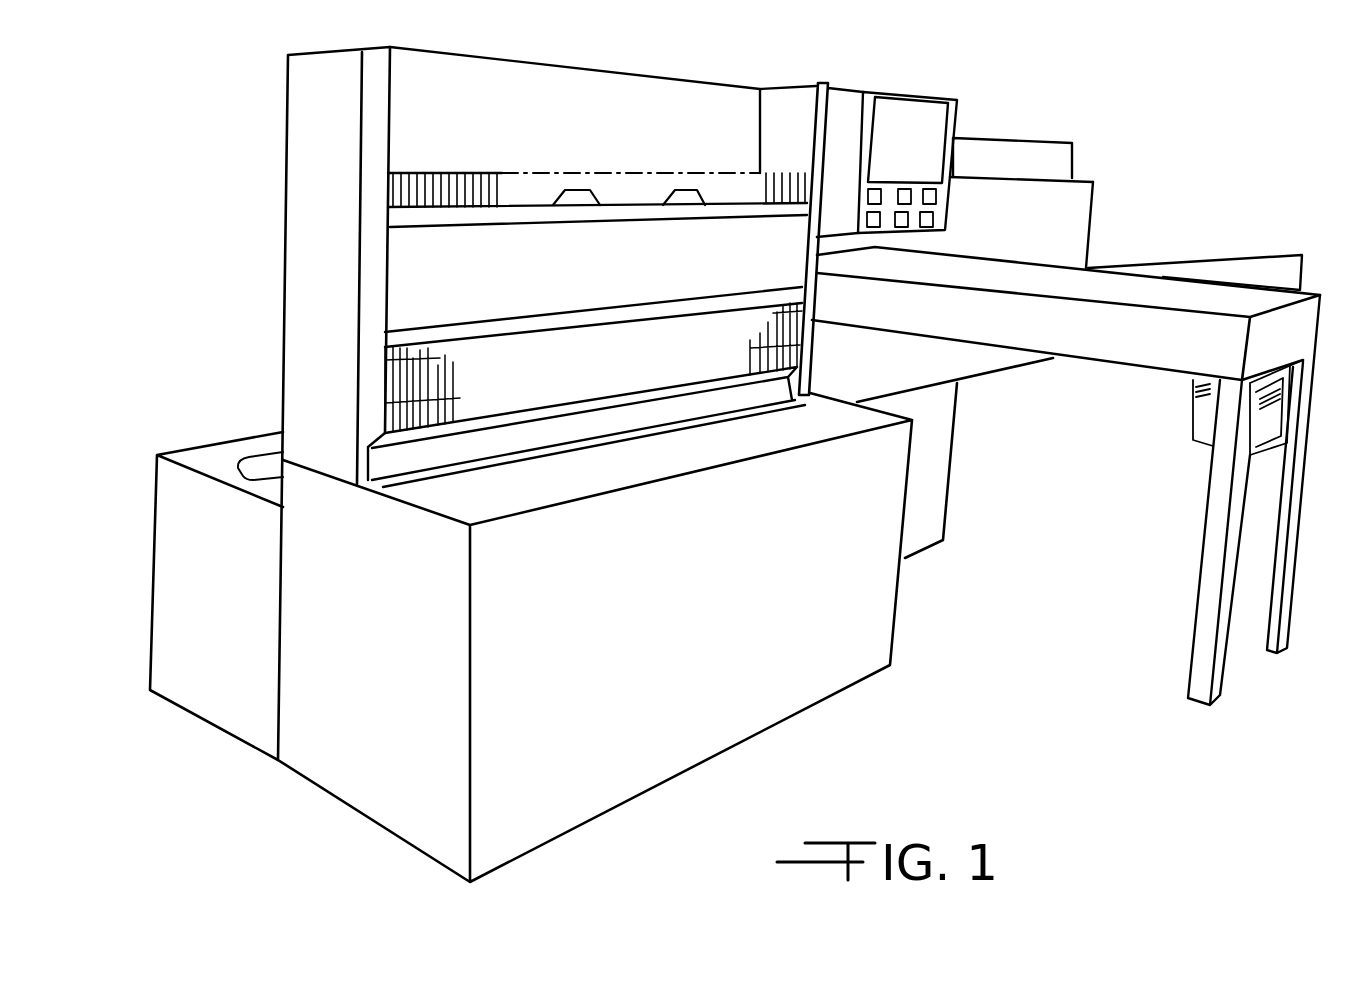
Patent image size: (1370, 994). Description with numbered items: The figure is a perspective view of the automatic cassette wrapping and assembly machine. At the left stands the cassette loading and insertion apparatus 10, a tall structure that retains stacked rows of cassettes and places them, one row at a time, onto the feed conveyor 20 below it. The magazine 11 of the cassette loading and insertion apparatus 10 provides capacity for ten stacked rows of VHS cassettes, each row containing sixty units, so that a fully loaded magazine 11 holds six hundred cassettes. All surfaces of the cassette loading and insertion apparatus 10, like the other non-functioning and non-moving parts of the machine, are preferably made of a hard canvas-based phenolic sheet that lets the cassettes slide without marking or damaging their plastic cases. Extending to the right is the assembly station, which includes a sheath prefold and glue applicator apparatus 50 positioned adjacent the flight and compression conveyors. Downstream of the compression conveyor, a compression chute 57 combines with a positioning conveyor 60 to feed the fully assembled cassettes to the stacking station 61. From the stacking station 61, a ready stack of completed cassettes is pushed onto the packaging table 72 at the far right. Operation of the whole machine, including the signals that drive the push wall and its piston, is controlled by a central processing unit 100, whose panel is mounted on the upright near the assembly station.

The cassette loading and insertion apparatus 10 is at (276, 118).
The magazine 11 is at (546, 132).
The feed conveyor 20 is at (257, 462).
The sheath prefold and glue applicator apparatus 50 is at (1112, 353).
The compression chute 57 is at (1022, 158).
The positioning conveyor 60 is at (1083, 177).
The stacking station 61 is at (1068, 212).
The packaging table 72 is at (1213, 262).
The central processing unit 100 is at (915, 125).